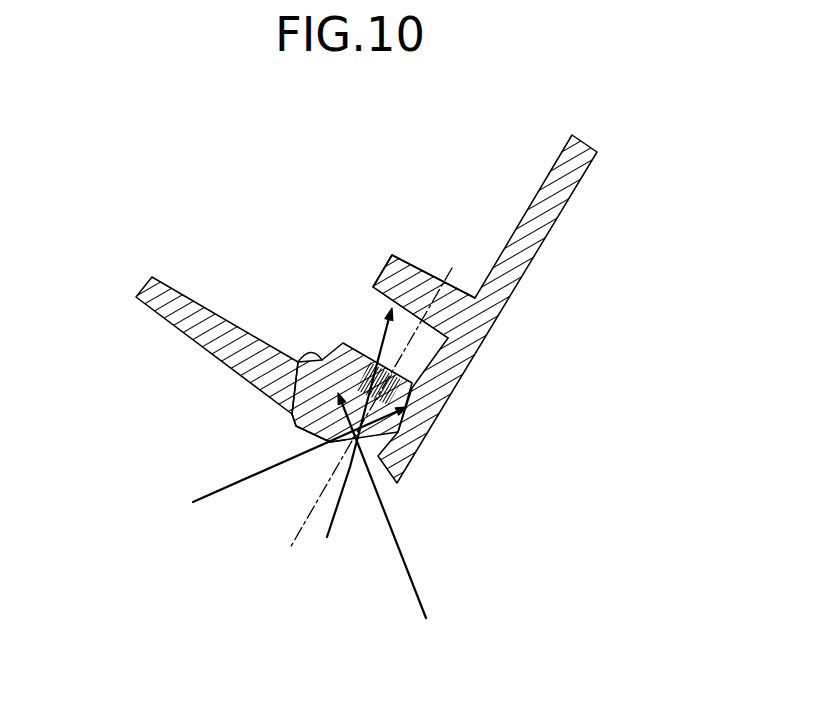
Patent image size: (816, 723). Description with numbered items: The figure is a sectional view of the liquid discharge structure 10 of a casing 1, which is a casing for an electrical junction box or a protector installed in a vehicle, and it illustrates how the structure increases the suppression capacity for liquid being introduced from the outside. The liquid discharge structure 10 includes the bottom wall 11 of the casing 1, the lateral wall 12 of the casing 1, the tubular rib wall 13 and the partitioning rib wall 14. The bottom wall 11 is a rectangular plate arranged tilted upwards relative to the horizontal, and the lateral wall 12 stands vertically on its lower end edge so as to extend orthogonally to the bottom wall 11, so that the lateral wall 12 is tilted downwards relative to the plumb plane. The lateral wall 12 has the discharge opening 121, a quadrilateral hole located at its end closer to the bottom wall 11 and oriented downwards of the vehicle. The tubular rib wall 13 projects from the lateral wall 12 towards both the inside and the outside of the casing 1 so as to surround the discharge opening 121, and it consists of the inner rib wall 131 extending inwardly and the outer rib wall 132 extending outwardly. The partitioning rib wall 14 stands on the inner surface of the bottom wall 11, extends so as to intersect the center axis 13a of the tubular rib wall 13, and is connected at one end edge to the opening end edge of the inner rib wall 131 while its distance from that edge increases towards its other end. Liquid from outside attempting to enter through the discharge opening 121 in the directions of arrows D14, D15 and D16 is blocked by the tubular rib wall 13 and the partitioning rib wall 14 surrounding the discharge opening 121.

The casing 1 is at (308, 187).
The liquid discharge structure 10 is at (195, 436).
The bottom wall 11 is at (584, 173).
The lateral wall 12 is at (165, 313).
The discharge opening 121 is at (330, 447).
The tubular rib wall 13 is at (193, 360).
The inner rib wall 131 is at (297, 364).
The outer rib wall 132 is at (295, 411).
The center axis 13a is at (310, 508).
The partitioning rib wall 14 is at (418, 268).
The arrow D14 is at (228, 490).
The arrow D15 is at (342, 512).
The arrow D16 is at (402, 550).